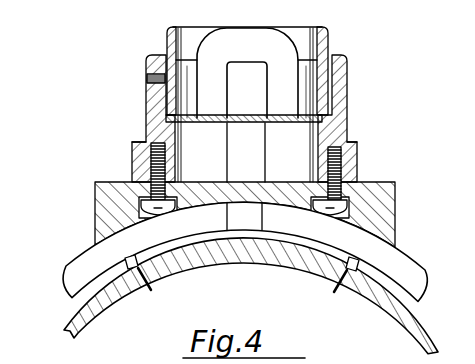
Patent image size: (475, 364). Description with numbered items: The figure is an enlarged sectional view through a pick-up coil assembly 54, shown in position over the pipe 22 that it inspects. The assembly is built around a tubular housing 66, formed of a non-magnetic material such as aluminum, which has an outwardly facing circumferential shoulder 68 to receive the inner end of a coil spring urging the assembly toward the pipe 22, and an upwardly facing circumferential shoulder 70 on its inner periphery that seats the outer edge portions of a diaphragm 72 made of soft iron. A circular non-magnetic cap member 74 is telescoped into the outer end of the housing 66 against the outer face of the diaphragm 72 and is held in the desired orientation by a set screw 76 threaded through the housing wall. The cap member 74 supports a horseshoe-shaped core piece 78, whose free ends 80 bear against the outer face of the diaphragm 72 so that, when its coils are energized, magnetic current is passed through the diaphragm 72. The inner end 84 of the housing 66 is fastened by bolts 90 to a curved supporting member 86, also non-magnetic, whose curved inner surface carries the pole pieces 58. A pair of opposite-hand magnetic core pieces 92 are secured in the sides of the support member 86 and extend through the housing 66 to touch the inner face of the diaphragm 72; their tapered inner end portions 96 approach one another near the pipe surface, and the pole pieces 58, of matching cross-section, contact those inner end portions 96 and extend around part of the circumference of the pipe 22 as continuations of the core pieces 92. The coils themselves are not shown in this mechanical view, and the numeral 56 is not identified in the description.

The pipe 22 is at (108, 300).
The pick-up coil assembly 54 is at (95, 190).
The fastener 56 is at (152, 290).
The pole pieces 58 is at (76, 275).
The tubular housing 66 is at (133, 153).
The circumferential shoulder 68 is at (143, 140).
The circumferential shoulder 70 is at (146, 117).
The diaphragm 72 is at (256, 97).
The cap member 74 is at (167, 33).
The set screw 76 is at (146, 79).
The horseshoe-shaped core piece 78 is at (244, 40).
The free ends 80 is at (216, 97).
The inner end 84 is at (350, 177).
The supporting member 86 is at (383, 205).
The bolts 90 is at (345, 143).
The core pieces 92 is at (253, 157).
The inner end portions 96 is at (256, 215).